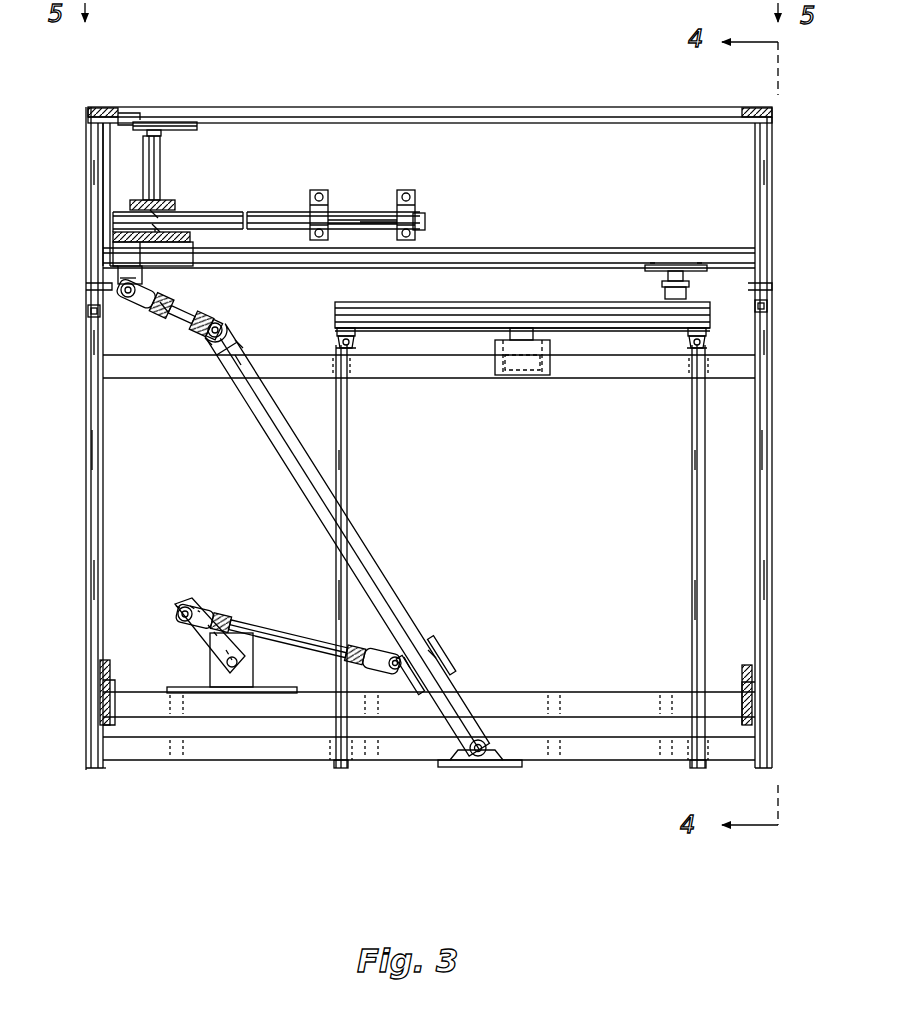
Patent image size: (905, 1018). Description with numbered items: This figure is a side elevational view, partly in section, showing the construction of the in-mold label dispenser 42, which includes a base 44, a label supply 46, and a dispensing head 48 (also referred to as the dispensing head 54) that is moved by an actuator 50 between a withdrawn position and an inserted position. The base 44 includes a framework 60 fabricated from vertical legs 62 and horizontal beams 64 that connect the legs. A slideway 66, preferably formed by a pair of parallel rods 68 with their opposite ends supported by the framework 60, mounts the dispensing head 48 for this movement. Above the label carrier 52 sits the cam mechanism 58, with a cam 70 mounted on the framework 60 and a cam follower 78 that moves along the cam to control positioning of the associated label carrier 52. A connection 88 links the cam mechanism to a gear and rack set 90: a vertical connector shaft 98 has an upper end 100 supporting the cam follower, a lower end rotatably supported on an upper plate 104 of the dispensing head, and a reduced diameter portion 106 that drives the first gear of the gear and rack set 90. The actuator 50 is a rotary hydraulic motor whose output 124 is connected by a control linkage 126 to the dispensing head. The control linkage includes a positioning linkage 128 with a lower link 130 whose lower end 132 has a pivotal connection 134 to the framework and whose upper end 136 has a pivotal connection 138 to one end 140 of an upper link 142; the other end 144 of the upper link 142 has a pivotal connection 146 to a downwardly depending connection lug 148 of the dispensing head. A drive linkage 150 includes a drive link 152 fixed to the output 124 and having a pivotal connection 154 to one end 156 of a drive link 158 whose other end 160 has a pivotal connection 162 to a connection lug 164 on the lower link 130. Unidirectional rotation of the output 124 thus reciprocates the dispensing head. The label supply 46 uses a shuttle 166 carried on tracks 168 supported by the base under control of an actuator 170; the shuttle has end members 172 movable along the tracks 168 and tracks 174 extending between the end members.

The in-mold label dispenser 42 is at (524, 78).
The base 44 is at (135, 778).
The label supply 46 is at (712, 282).
The dispensing head 48 is at (263, 212).
The actuator 50 is at (208, 672).
The label carrier 52 is at (370, 213).
The dispensing head 54 is at (113, 236).
The cam mechanism 58 is at (135, 125).
The framework 60 is at (82, 727).
The vertical legs 62 is at (100, 522).
The horizontal beams 64 is at (455, 368).
The slideway 66 is at (538, 250).
The parallel rods 68 is at (548, 262).
The cam 70 is at (352, 107).
The cam follower 78 is at (167, 122).
The connection 88 is at (135, 172).
The gear and rack set 90 is at (225, 233).
The vertical connector shaft 98 is at (162, 176).
The upper end 100 is at (162, 130).
The upper plate 104 is at (172, 200).
The reduced diameter portion 106 is at (170, 230).
The output 124 is at (236, 668).
The control linkage 126 is at (432, 642).
The positioning linkage 128 is at (240, 330).
The lower link 130 is at (352, 522).
The lower end 132 is at (462, 758).
The pivotal connection 134 is at (478, 765).
The upper end 136 is at (247, 368).
The pivotal connection 138 is at (210, 340).
The end 140 is at (212, 322).
The upper link 142 is at (185, 318).
The other end 144 is at (150, 305).
The pivotal connection 146 is at (122, 296).
The connection lug 148 is at (125, 270).
The drive linkage 150 is at (175, 610).
The drive link 152 is at (200, 640).
The pivotal connection 154 is at (195, 608).
The end 156 is at (212, 617).
The drive link 158 is at (298, 632).
The other end 160 is at (360, 668).
The pivotal connection 162 is at (407, 650).
The connection lug 164 is at (405, 663).
The shuttle 166 is at (422, 330).
The tracks 168 is at (343, 336).
The actuator 170 is at (540, 380).
The end members 172 is at (365, 330).
The tracks 174 is at (500, 305).